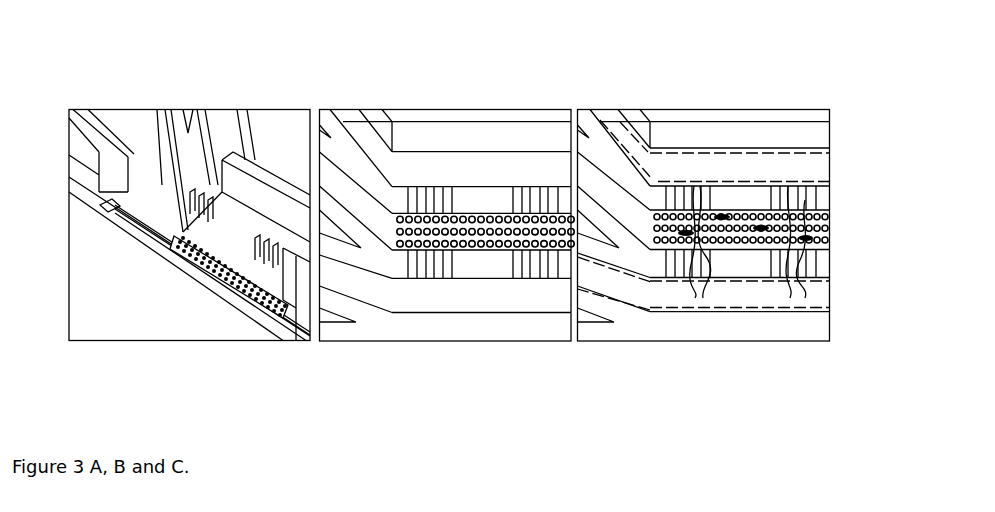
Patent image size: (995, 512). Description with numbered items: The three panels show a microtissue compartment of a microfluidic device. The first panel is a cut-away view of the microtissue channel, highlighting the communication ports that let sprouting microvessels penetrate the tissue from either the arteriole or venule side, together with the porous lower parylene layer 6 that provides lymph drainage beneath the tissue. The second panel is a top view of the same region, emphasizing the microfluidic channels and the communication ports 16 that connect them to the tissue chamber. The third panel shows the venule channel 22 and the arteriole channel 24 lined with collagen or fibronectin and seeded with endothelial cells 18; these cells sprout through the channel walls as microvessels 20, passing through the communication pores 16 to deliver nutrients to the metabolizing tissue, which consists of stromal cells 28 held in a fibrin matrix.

In FIG. 3A, the porous lower parylene layer 6 is at (165, 240).
In FIG. 3B, the communication ports 16 is at (448, 198).
In FIG. 3C, the endothelial cells 18 is at (815, 152).
In FIG. 3C, the microvessels 20 is at (813, 198).
In FIG. 3C, the venule channel 22 is at (678, 168).
In FIG. 3C, the arteriole channel 24 is at (787, 295).
In FIG. 3C, the stromal cells 28 is at (815, 247).